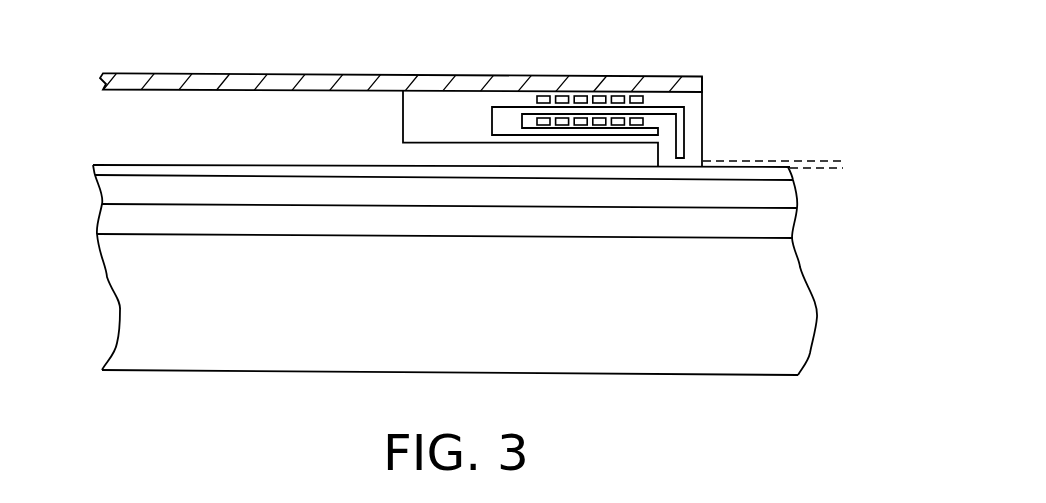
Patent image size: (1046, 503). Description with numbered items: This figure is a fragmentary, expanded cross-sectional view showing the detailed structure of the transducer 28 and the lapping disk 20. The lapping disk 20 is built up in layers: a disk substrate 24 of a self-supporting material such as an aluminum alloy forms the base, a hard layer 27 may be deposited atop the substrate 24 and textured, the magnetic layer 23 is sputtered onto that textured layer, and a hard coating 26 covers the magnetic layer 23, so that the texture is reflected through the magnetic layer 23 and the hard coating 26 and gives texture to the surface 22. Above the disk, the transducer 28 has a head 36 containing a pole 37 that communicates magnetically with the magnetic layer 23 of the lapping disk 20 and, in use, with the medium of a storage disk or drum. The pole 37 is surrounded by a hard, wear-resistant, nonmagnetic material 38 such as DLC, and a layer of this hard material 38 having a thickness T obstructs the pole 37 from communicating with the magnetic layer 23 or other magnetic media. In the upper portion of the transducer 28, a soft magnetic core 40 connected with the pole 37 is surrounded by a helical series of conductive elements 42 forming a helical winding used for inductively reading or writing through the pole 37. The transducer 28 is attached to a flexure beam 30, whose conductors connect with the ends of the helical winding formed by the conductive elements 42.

The lapping disk 20 is at (858, 317).
The surface 22 is at (115, 154).
The magnetic layer 23 is at (104, 192).
The disk substrate 24 is at (467, 307).
The hard coating 26 is at (94, 170).
The hard layer 27 is at (108, 219).
The transducer 28 is at (362, 125).
The flexure beam 30 is at (323, 73).
The head 36 is at (720, 147).
The pole 37 is at (683, 132).
The hard, wear-resistant, nonmagnetic material 38 is at (695, 108).
The soft magnetic core 40 is at (503, 122).
The conductive elements 42 is at (593, 93).
The thickness T is at (856, 167).